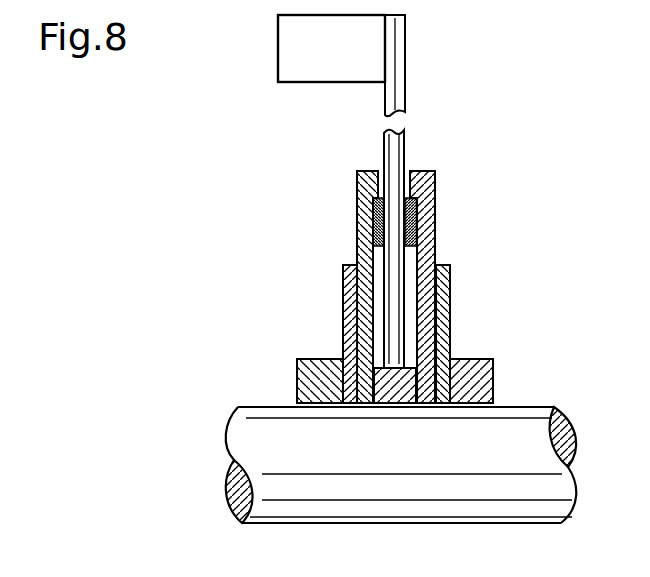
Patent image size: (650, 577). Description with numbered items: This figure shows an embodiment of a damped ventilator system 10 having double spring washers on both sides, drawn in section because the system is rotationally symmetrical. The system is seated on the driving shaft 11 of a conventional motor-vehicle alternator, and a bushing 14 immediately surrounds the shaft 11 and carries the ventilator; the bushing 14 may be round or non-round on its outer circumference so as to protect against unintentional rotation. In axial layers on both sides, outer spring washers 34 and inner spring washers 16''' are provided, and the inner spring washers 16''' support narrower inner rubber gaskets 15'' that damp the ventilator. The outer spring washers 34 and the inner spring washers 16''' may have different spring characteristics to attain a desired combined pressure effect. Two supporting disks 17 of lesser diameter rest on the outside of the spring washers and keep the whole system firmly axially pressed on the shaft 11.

The ventilator system 10 is at (405, 140).
The inner spring washers 16''' is at (386, 266).
The inner rubber gaskets 15'' is at (385, 209).
The outer spring washers 34 is at (349, 278).
The supporting disks 17 is at (322, 372).
The bushing 14 is at (395, 393).
The driving shaft 11 is at (514, 430).